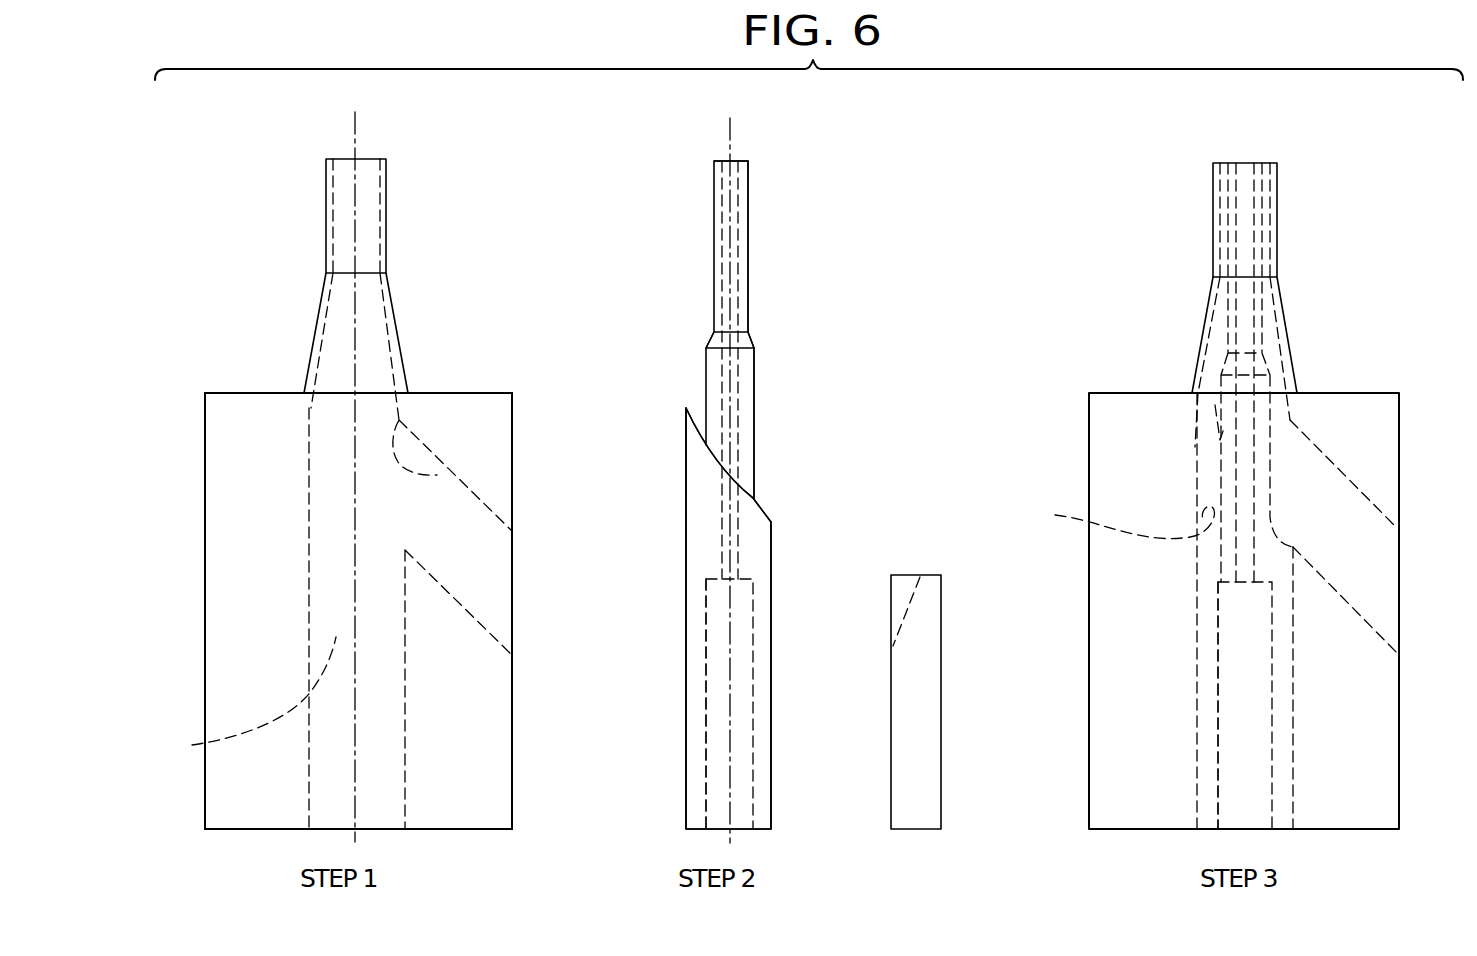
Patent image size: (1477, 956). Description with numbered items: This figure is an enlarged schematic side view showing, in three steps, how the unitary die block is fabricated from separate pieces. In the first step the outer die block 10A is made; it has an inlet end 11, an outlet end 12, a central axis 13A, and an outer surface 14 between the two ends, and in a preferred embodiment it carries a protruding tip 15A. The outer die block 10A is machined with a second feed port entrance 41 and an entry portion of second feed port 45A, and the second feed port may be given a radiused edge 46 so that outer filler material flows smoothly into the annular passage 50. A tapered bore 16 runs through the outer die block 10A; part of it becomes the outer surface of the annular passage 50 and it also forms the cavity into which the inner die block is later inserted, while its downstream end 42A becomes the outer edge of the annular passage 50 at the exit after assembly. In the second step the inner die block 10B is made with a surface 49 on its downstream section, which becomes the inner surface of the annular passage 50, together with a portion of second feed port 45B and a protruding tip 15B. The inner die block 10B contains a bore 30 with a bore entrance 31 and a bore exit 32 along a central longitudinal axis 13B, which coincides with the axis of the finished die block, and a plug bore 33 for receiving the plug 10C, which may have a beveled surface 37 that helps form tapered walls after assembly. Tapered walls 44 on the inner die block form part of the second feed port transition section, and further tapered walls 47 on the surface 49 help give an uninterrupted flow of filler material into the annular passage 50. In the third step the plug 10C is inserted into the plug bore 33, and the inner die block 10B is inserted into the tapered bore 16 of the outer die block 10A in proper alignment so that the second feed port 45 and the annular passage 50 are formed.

The outer die block 10A is at (205, 408).
The inner die block 10B is at (771, 770).
The plug 10C is at (900, 732).
The inlet end 11 is at (246, 829).
The outlet end 12 is at (470, 393).
The central axis 13A is at (357, 124).
The central longitudinal axis 13B is at (730, 124).
The outer surface 14 is at (205, 507).
The protruding tip 15A is at (318, 206).
The protruding tip 15B is at (702, 219).
The tapered bore 16 is at (689, 634).
The bore 30 is at (728, 373).
The bore entrance 31 is at (726, 578).
The bore exit 32 is at (735, 160).
The plug bore 33 is at (722, 706).
The beveled surface 37 is at (912, 602).
The second feed port entrance 41 is at (512, 600).
The downstream end 42A is at (340, 159).
The tapered walls 44 is at (697, 408).
The second feed port 45 is at (1337, 535).
The entry portion of second feed port 45A is at (455, 528).
The portion of second feed port 45B is at (763, 488).
The radiused edge 46 is at (437, 475).
The tapered walls 47 is at (748, 342).
The surface 49 is at (748, 235).
The annular passage 50 is at (1265, 331).